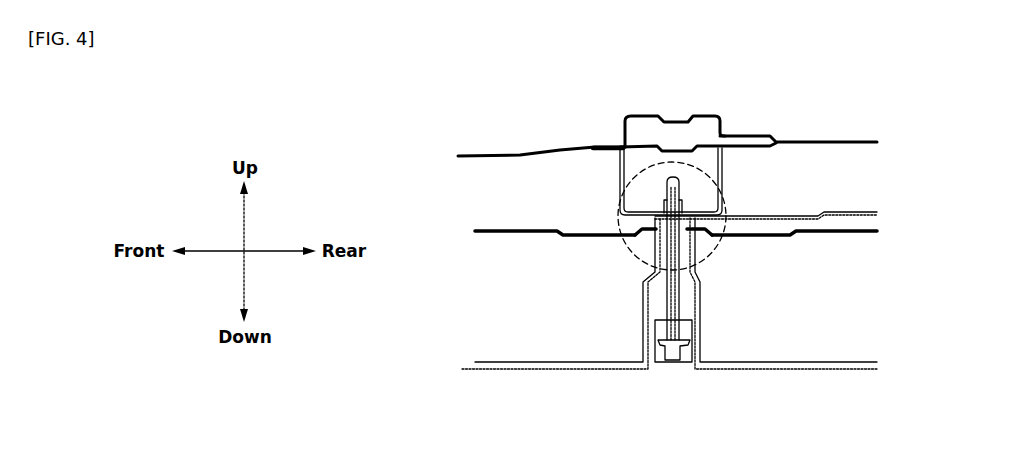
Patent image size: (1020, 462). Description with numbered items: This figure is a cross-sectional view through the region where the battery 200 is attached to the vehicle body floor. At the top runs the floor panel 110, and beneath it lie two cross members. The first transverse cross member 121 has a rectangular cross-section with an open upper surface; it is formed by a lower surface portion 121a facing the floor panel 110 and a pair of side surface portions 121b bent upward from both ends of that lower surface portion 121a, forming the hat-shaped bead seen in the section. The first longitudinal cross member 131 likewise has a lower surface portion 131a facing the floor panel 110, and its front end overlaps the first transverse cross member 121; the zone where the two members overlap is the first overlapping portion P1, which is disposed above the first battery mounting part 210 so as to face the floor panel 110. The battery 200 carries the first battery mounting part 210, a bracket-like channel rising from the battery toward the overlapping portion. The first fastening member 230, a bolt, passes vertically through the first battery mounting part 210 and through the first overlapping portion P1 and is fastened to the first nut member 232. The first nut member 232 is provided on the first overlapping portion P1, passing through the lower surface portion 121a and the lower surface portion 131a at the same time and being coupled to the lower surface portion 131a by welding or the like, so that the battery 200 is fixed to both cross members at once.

The floor panel 110 is at (849, 141).
The first nut member 232 is at (666, 211).
The first overlapping portion P1 is at (691, 158).
The battery 200 is at (640, 286).
The first transverse cross member 121 is at (517, 258).
The lower surface portion 121a is at (647, 233).
The side surface portions 121b is at (722, 166).
The first longitudinal cross member 131 is at (766, 246).
The lower surface portion 131a is at (767, 216).
The first battery mounting part 210 is at (700, 297).
The first fastening member 230 is at (675, 357).